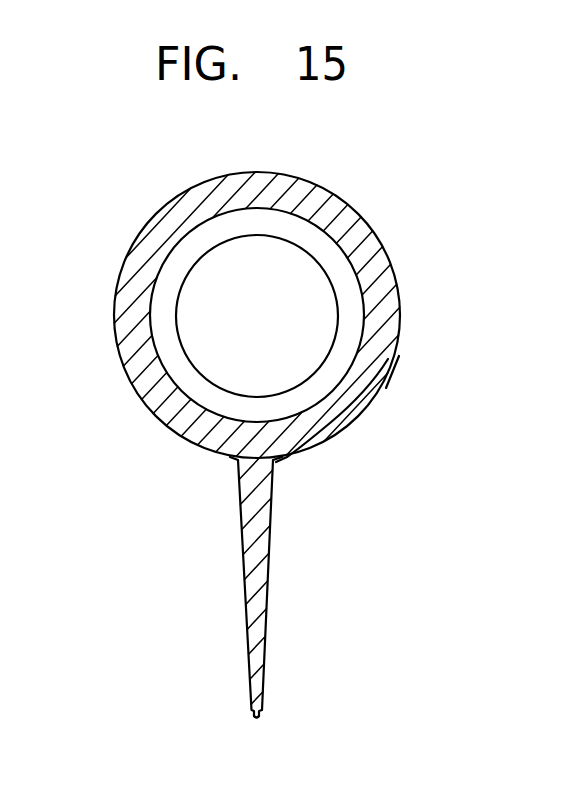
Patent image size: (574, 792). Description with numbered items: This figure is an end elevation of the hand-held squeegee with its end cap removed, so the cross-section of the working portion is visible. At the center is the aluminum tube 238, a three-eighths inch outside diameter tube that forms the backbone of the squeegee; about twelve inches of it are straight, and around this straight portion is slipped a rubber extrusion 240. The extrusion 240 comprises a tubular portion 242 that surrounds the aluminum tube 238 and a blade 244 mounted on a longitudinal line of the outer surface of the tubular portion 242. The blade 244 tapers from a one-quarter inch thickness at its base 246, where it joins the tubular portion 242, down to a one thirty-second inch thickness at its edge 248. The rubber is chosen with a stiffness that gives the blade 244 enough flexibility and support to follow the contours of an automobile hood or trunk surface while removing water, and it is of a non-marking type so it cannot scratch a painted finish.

The aluminum tube 238 is at (330, 262).
The rubber extrusion 240 is at (395, 372).
The tubular portion 242 is at (157, 410).
The blade 244 is at (232, 598).
The base 246 is at (279, 462).
The edge 248 is at (257, 718).